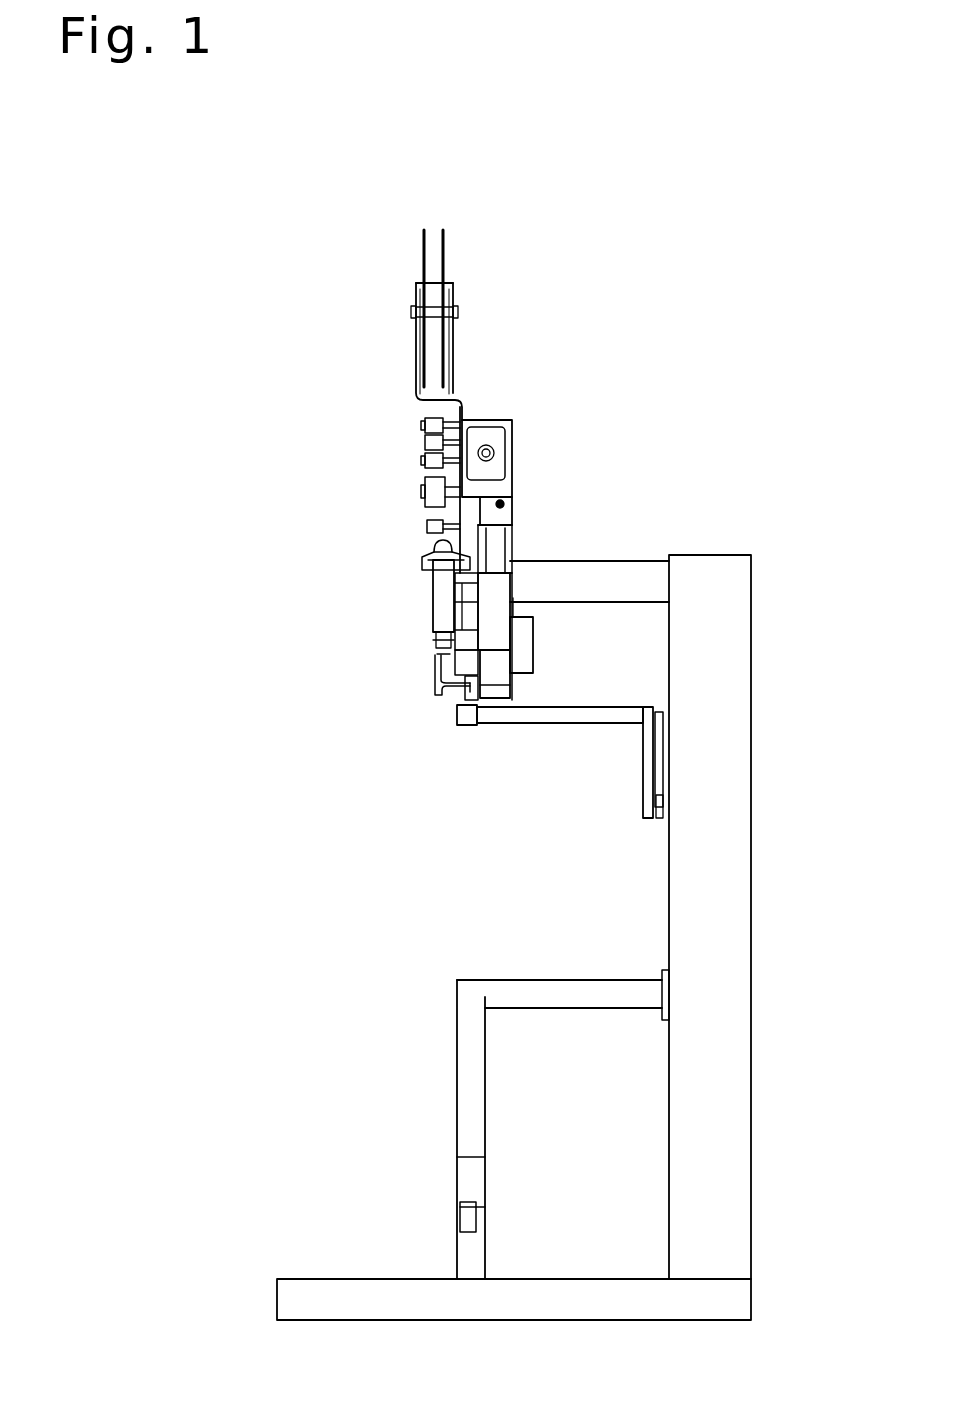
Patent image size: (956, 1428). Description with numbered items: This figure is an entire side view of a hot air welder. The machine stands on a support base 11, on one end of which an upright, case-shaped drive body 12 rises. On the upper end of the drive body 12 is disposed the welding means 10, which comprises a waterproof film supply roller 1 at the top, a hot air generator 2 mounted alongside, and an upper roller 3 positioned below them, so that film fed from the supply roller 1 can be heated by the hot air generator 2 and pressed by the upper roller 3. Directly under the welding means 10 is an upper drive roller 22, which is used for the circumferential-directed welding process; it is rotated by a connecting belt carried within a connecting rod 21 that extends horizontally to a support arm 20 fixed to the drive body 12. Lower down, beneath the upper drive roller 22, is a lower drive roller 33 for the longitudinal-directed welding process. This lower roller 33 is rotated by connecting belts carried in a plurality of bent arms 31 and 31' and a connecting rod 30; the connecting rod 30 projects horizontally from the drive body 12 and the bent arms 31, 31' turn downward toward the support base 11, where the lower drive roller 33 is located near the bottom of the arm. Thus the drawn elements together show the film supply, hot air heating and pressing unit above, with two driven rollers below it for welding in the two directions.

The waterproof film supply roller 1 is at (443, 262).
The hot air generator 2 is at (437, 597).
The upper roller 3 is at (462, 697).
The welding means 10 is at (398, 619).
The support base 11 is at (320, 1287).
The drive body 12 is at (735, 907).
The support arm 20 is at (646, 765).
The connecting rod 21 is at (563, 718).
The upper drive roller 22 is at (463, 720).
The connecting rod 30 is at (585, 983).
The bent arm 31 is at (423, 1129).
The bent arm 31' is at (534, 1205).
The lower drive roller 33 is at (462, 1218).